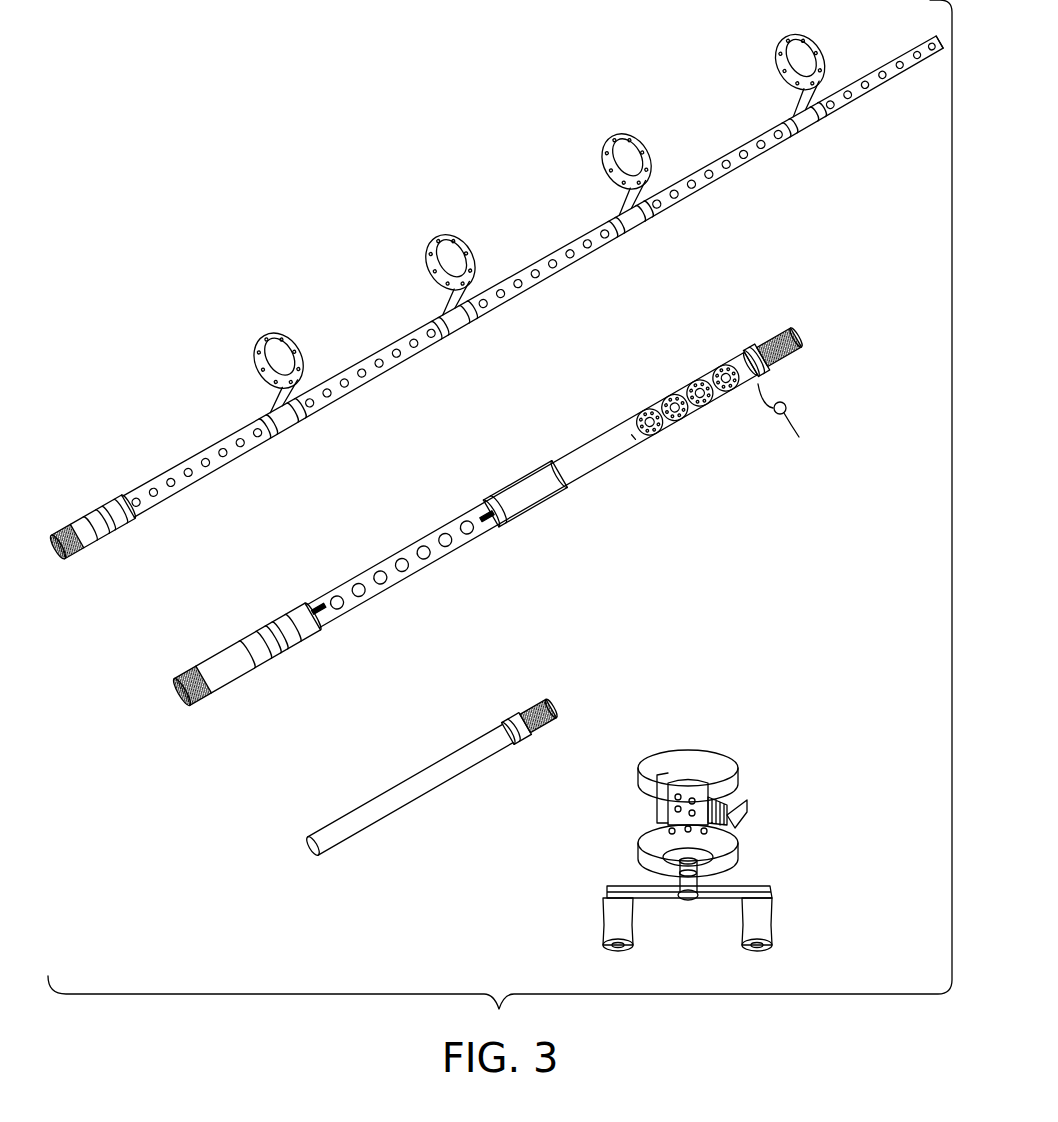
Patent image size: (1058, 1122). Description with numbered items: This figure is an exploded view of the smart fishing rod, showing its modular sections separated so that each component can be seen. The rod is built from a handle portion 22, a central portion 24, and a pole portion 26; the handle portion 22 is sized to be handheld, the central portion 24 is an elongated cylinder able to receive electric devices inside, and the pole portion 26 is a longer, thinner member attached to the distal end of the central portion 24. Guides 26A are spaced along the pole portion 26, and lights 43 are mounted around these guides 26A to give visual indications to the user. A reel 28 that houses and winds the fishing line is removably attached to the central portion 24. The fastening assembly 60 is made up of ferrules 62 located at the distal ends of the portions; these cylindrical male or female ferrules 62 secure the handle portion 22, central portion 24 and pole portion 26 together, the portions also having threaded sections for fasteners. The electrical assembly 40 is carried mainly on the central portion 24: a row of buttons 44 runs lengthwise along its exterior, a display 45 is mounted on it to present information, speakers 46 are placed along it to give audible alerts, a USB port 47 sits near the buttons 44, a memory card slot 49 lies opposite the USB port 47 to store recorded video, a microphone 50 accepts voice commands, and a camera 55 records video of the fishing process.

The handle portion 22 is at (317, 830).
The central portion 24 is at (552, 495).
The pole portion 26 is at (514, 297).
The guides 26A is at (615, 134).
The reel 28 is at (690, 750).
The electrical assembly 40 is at (534, 506).
The lights 43 is at (578, 243).
The buttons 44 is at (420, 560).
The display 45 is at (528, 478).
The speakers 46 is at (695, 373).
The USB port 47 is at (312, 608).
The memory card slot 49 is at (486, 512).
The microphone 50 is at (632, 433).
The camera 55 is at (786, 418).
The fastening assembly 60 is at (185, 575).
The ferrules 62 is at (124, 548).